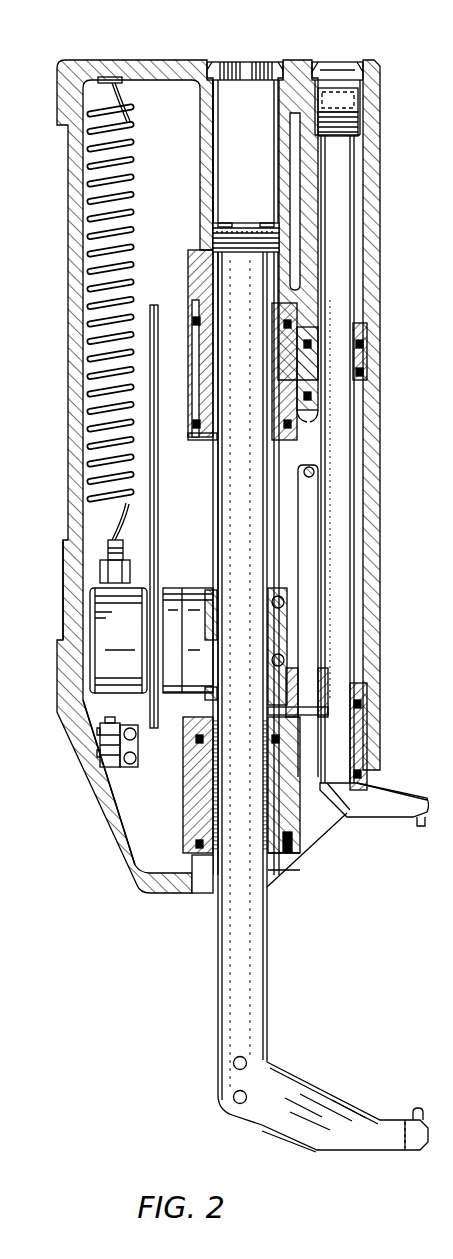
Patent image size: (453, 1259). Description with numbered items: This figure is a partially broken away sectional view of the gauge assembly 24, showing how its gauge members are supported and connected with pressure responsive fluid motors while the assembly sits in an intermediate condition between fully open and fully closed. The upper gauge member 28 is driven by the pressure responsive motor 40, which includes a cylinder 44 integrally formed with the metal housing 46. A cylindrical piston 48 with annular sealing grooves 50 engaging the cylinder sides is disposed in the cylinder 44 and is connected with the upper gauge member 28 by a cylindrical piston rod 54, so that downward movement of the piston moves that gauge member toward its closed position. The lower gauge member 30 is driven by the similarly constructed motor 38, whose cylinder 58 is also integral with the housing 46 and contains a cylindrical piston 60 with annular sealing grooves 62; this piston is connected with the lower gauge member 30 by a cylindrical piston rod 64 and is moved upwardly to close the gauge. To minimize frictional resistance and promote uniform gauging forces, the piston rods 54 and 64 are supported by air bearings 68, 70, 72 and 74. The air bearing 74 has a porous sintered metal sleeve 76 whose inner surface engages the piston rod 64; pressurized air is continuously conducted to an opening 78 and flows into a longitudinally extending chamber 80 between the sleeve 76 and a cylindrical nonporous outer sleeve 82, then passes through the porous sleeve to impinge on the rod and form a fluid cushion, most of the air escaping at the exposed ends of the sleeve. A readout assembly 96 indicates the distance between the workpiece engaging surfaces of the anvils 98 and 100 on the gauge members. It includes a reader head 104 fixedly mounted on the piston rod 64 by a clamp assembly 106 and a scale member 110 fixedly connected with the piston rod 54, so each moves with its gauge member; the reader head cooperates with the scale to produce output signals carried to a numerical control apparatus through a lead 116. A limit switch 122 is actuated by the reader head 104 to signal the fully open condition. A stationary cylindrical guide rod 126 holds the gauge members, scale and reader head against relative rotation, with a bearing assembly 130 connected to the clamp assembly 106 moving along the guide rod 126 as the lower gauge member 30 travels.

The gauge assembly 24 is at (158, 58).
The upper gauge member 28 is at (383, 818).
The lower gauge member 30 is at (330, 1113).
The pressure responsive motor 38 is at (240, 97).
The pressure responsive motor 40 is at (333, 80).
The cylinder 44 is at (358, 175).
The housing 46 is at (380, 270).
The piston 48 is at (360, 127).
The annular sealing grooves 50 is at (363, 110).
The piston rod 54 is at (343, 443).
The cylinder 58 is at (220, 124).
The piston 60 is at (240, 211).
The annular sealing grooves 62 is at (210, 240).
The piston rod 64 is at (250, 970).
The air bearing 68 is at (372, 356).
The air bearing 70 is at (360, 728).
The air bearing 72 is at (198, 428).
The air bearing 74 is at (183, 823).
The porous sintered metal sleeve 76 is at (278, 853).
The opening 78 is at (192, 782).
The chamber 80 is at (213, 803).
The nonporous outer sleeve 82 is at (297, 812).
The readout assembly 96 is at (83, 597).
The anvil 98 is at (421, 821).
The anvil 100 is at (434, 1090).
The reader head 104 is at (100, 617).
The clamp assembly 106 is at (213, 590).
The scale member 110 is at (155, 305).
The lead 116 is at (88, 249).
The limit switch 122 is at (100, 733).
The guide rod 126 is at (306, 518).
The bearing assembly 130 is at (315, 670).